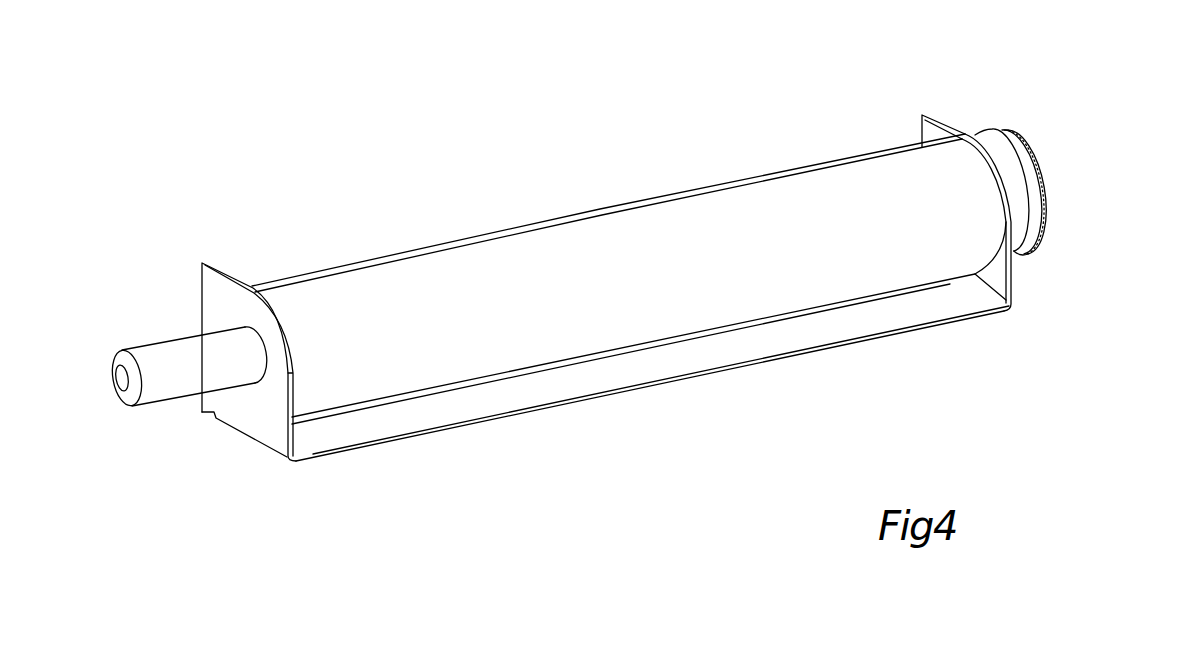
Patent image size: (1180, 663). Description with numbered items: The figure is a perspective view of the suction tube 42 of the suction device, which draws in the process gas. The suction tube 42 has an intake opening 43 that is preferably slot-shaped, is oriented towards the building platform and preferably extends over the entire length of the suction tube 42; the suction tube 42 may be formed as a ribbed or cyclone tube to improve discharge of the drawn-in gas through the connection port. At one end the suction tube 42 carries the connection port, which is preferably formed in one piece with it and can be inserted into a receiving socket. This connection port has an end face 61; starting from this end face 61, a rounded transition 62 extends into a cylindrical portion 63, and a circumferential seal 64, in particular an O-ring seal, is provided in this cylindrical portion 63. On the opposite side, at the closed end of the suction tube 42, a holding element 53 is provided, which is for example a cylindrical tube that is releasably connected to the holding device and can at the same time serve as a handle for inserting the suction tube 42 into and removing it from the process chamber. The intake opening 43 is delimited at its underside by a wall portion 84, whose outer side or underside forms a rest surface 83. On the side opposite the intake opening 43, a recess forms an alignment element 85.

The suction tube 42 is at (666, 285).
The intake opening 43 is at (371, 434).
The holding element 53 is at (192, 382).
The end face 61 is at (1053, 194).
The rounded transition 62 is at (1024, 128).
The cylindrical portion 63 is at (1021, 201).
The circumferential seal 64 is at (992, 128).
The rest surface 83 is at (427, 454).
The wall portion 84 is at (485, 410).
The alignment element 85 is at (206, 426).